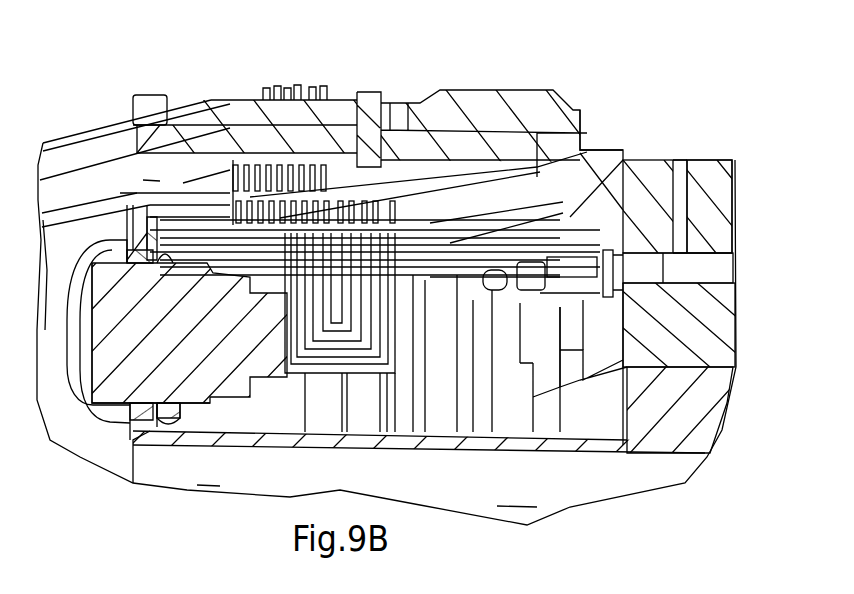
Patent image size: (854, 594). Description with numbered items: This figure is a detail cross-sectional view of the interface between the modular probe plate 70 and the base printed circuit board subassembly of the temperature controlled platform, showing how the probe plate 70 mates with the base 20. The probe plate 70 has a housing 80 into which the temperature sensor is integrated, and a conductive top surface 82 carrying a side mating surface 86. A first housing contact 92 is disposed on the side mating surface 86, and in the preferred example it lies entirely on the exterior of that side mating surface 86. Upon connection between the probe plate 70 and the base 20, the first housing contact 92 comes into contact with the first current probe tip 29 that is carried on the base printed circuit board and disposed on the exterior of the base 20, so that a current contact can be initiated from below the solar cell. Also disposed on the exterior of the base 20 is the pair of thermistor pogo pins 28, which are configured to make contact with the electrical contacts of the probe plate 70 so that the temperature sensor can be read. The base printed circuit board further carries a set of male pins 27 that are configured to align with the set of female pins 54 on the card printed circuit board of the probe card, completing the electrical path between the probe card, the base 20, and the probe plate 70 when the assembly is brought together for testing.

The base 20 is at (703, 427).
The set of male pins 27 is at (43, 220).
The pair of thermistor pogo pins 28 is at (515, 285).
The first current probe tip 29 is at (627, 295).
The set of female pins 54 is at (208, 165).
The probe plate 70 is at (735, 197).
The housing 80 is at (706, 157).
The conductive top surface 82 is at (675, 160).
The side mating surface 86 is at (622, 157).
The first housing contact 92 is at (642, 215).